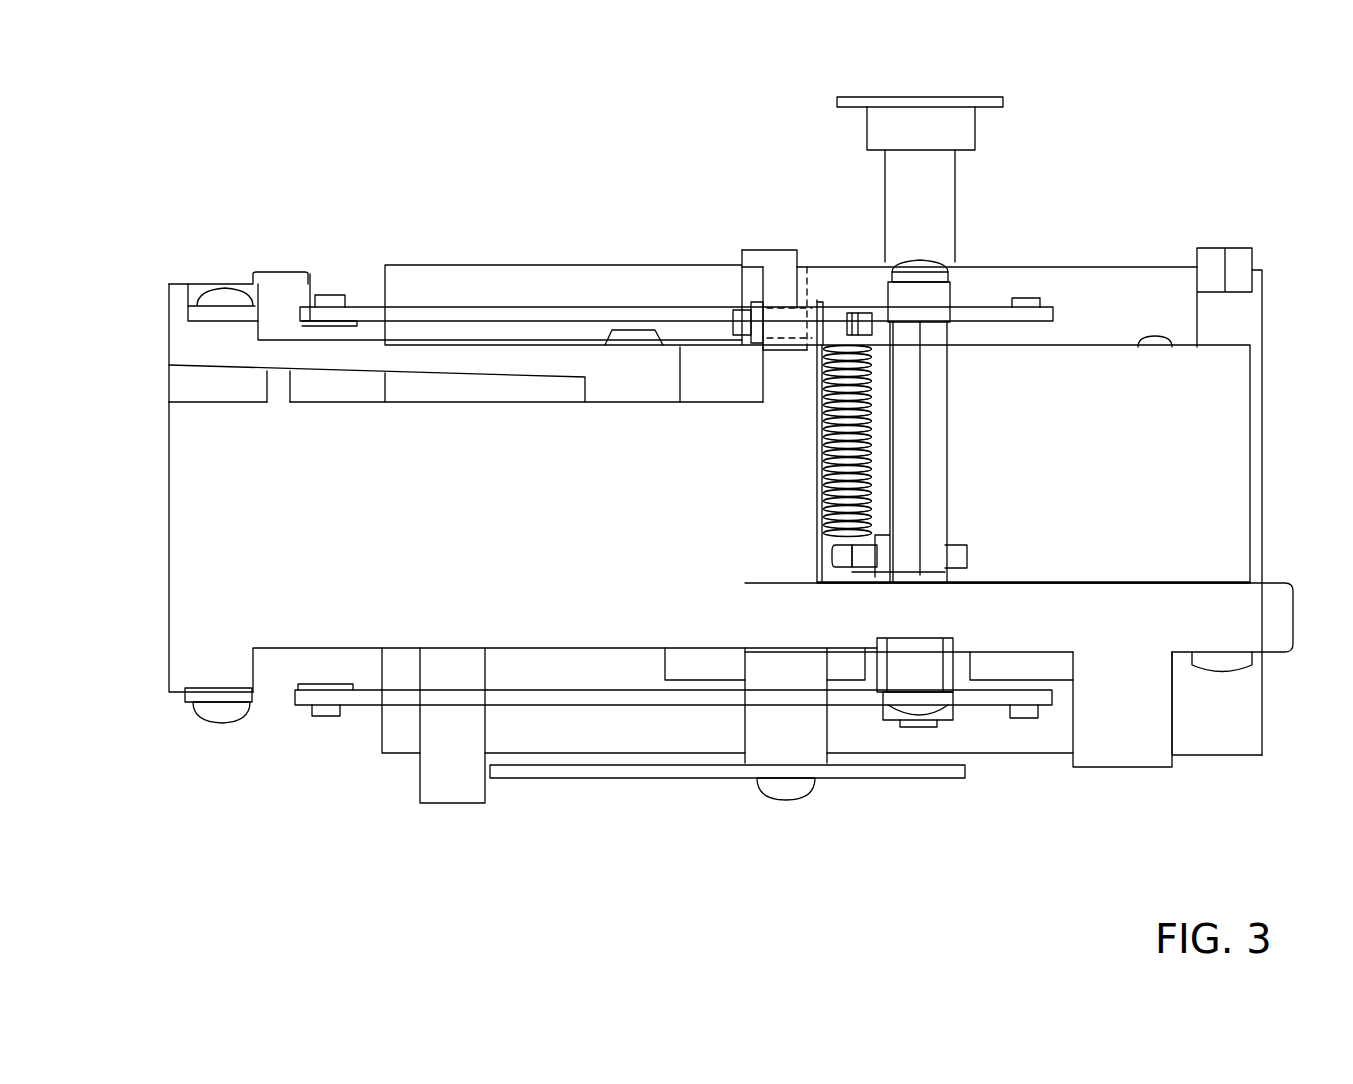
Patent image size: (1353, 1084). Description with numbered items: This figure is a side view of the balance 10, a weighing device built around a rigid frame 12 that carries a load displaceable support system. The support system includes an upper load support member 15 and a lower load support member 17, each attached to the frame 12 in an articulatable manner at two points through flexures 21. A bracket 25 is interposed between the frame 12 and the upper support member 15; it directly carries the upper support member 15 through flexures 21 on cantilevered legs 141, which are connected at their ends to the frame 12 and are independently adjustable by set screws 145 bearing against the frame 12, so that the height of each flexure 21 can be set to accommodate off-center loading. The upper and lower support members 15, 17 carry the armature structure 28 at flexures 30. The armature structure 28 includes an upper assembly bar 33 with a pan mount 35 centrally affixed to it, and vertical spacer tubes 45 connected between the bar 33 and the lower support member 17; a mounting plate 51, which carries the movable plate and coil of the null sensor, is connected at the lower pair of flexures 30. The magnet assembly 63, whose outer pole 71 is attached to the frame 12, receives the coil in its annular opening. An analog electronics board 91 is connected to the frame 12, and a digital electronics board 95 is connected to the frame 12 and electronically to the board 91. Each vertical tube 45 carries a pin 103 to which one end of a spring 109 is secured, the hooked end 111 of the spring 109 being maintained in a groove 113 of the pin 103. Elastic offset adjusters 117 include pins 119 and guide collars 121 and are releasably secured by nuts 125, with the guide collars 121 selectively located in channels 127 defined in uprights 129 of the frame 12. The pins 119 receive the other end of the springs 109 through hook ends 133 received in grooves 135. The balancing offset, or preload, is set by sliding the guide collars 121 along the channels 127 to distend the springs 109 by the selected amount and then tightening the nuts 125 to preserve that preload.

The balance 10 is at (495, 246).
The rigid frame 12 is at (410, 547).
The upper load support member 15 is at (531, 310).
The lower load support member 17 is at (387, 697).
The flexures 21 is at (280, 300).
The bracket 25 is at (192, 338).
The armature structure 28 is at (970, 249).
The flexures 30 is at (965, 322).
The upper assembly bar 33 is at (957, 298).
The pan mount 35 is at (935, 100).
The vertical spacer tubes 45 is at (930, 462).
The mounting plate 51 is at (915, 670).
The magnet assembly 63 is at (1142, 452).
The outer pole 71 is at (1175, 535).
The analog electronics board 91 is at (705, 773).
The digital electronics board 95 is at (1123, 292).
The pin 103 is at (958, 555).
The springs 109 is at (877, 370).
The hooked end 111 is at (851, 568).
The groove 113 is at (843, 560).
The elastic offset adjusters 117 is at (812, 300).
The pins 119 is at (817, 380).
The guide collars 121 is at (790, 340).
The nuts 125 is at (747, 310).
The channels 127 is at (808, 345).
The uprights 129 is at (780, 363).
The hook ends 133 is at (832, 320).
The grooves 135 is at (860, 320).
The cantilevered legs 141 is at (467, 363).
The set screws 145 is at (280, 387).